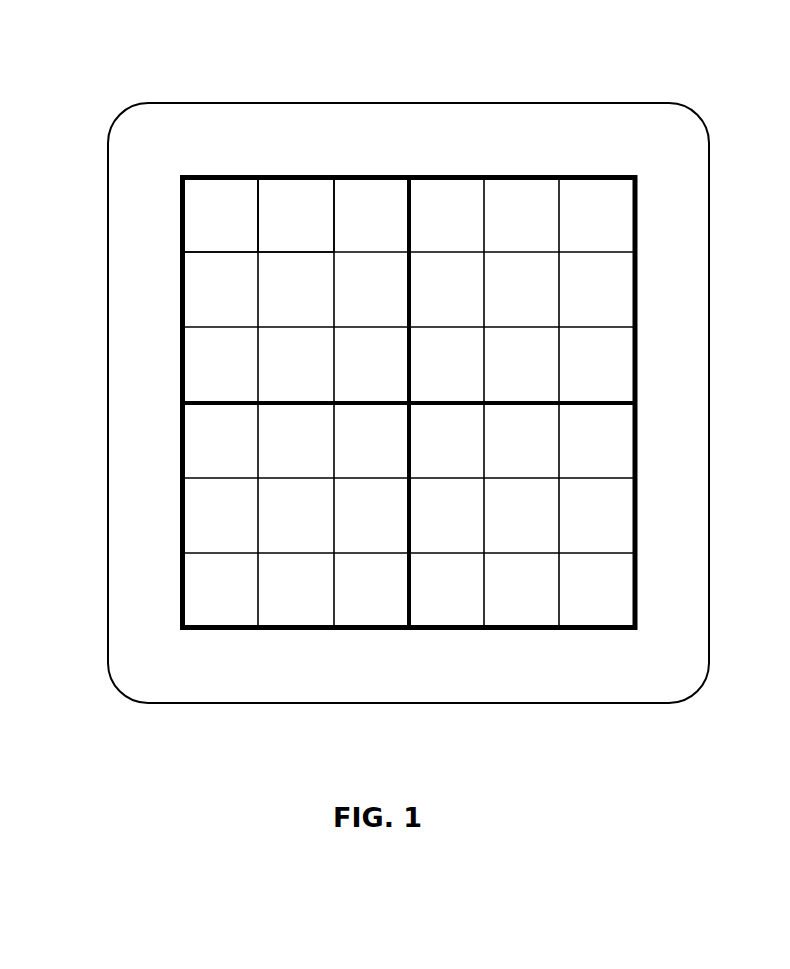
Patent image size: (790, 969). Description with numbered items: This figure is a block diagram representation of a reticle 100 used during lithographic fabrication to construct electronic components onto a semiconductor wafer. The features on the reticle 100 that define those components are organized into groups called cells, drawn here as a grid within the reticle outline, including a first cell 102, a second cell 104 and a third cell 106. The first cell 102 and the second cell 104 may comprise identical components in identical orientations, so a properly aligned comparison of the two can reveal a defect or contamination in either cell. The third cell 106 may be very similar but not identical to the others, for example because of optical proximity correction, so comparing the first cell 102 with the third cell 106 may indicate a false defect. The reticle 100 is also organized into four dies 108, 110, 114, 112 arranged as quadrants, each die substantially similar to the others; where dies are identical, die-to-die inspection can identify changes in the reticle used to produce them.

The reticle 100 is at (291, 103).
The first cell 102 is at (296, 185).
The second cell 104 is at (376, 185).
The third cell 106 is at (193, 280).
The die 108 is at (220, 162).
The die 110 is at (577, 166).
The die 112 is at (571, 642).
The die 114 is at (236, 640).